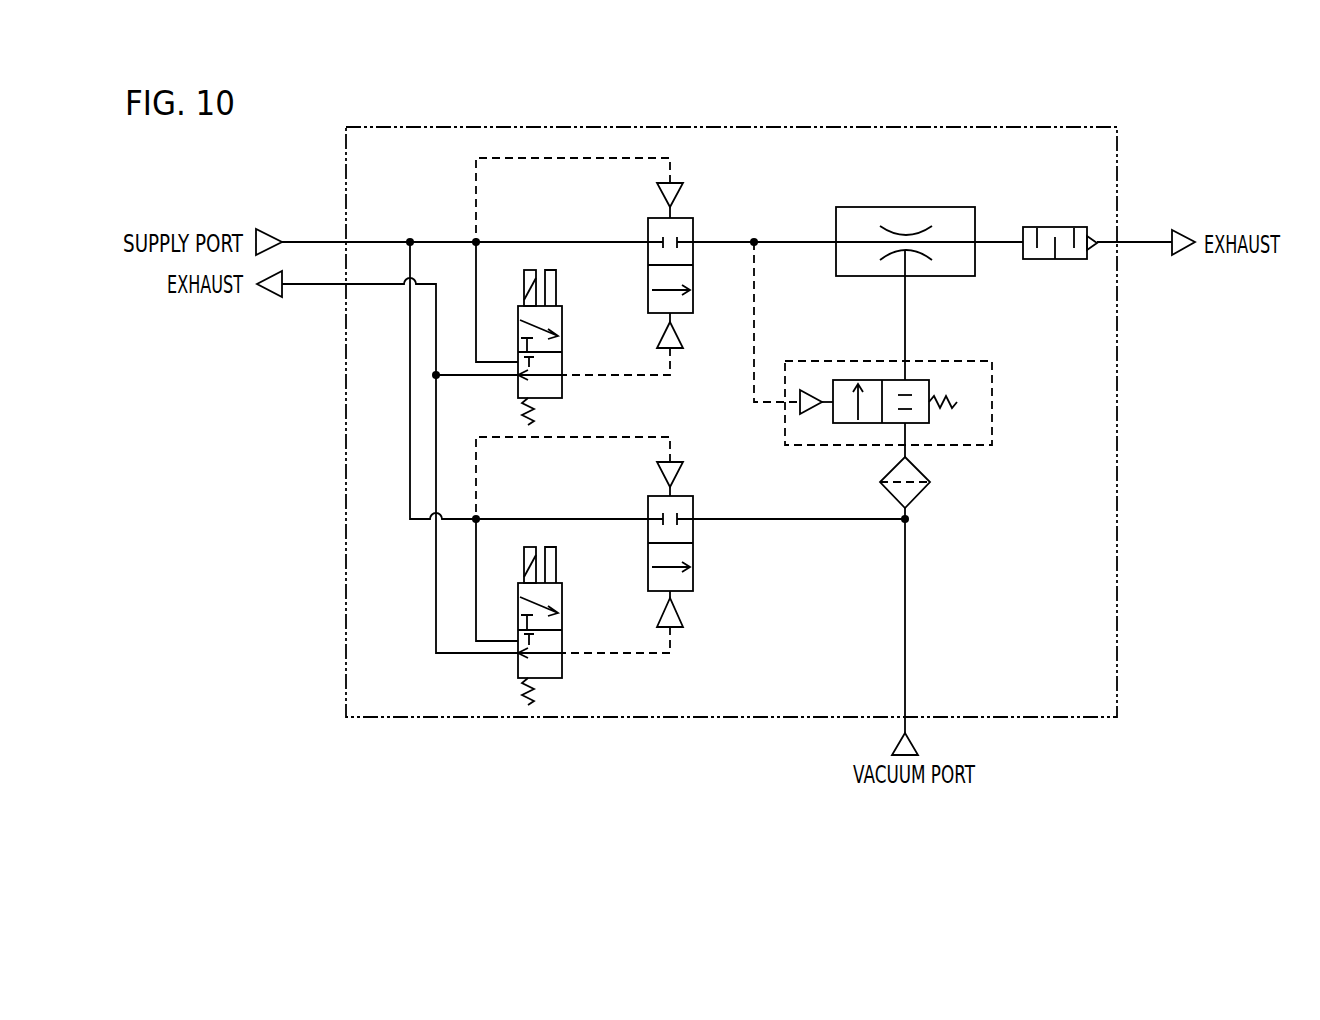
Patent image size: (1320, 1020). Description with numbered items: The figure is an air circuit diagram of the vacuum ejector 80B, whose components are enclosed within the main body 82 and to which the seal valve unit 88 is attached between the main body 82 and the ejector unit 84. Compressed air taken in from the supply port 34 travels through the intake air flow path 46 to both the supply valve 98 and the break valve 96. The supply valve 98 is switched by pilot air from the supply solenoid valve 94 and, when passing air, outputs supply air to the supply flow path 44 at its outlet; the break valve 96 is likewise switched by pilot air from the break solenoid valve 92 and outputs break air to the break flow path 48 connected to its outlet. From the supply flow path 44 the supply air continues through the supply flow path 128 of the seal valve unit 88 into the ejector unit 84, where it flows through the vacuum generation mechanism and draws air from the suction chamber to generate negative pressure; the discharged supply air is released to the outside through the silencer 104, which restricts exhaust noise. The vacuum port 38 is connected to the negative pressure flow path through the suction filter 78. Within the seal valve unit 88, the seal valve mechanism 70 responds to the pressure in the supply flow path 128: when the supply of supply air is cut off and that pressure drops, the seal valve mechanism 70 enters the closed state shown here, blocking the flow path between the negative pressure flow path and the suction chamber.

The vacuum ejector 80B is at (190, 162).
The main body 82 is at (1118, 186).
The supply port 34 is at (268, 230).
The intake air flow path 46 is at (384, 238).
The supply flow path 44 is at (721, 247).
The supply valve 98 is at (693, 218).
The supply solenoid valve 94 is at (562, 320).
The break valve 96 is at (693, 563).
The break solenoid valve 92 is at (562, 597).
The break flow path 48 is at (807, 522).
The supply flow path 128 is at (785, 238).
The ejector unit 84 is at (937, 207).
The silencer 104 is at (1048, 227).
The seal valve unit 88 is at (904, 403).
The seal valve mechanism 70 is at (848, 425).
The suction filter 78 is at (925, 492).
The vacuum port 38 is at (915, 745).